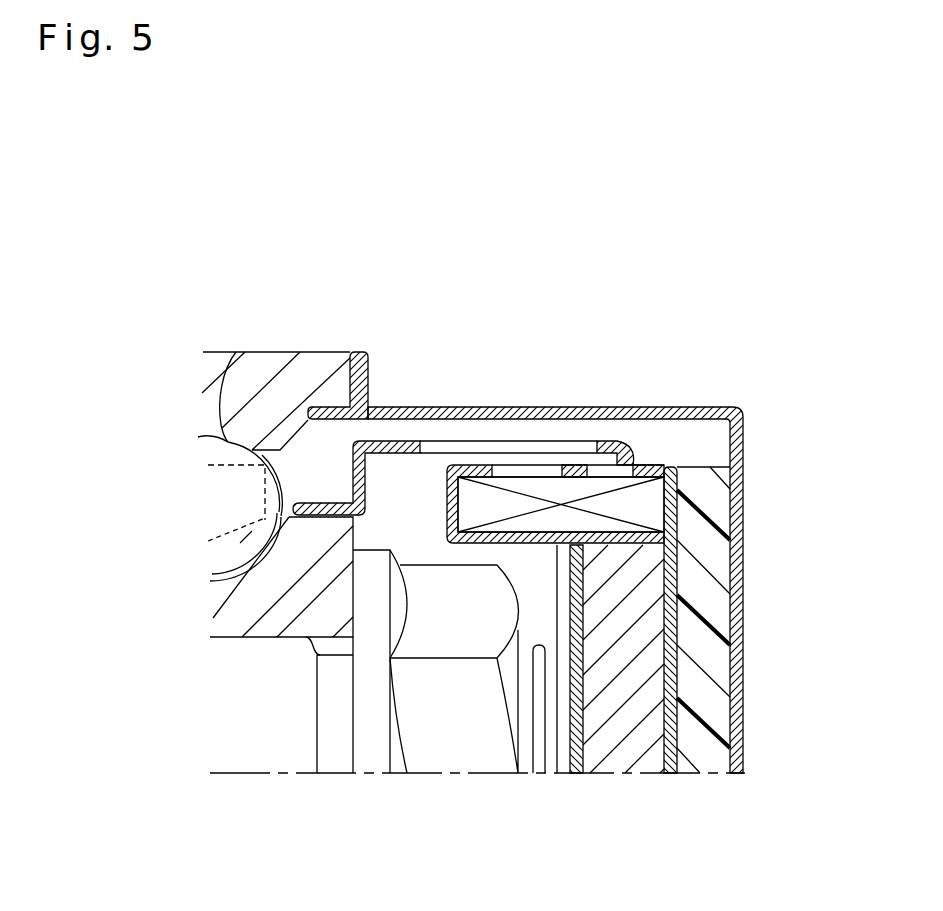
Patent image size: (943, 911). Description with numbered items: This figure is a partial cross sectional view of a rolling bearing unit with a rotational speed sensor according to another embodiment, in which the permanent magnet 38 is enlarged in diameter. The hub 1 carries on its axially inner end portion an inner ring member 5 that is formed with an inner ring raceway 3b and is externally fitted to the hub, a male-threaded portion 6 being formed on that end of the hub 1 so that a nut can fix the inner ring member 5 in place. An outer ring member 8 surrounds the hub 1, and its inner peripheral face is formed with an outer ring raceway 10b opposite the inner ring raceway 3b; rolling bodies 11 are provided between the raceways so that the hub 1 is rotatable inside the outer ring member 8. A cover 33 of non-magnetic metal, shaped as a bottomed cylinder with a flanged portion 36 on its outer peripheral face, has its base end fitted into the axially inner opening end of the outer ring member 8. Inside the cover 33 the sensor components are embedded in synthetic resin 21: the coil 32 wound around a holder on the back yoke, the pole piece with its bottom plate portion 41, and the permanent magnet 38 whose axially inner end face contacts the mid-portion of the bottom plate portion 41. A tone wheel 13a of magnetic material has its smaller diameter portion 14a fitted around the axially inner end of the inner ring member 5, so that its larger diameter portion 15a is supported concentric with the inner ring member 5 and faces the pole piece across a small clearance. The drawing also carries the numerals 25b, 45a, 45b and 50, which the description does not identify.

The hub 1 is at (215, 666).
The inner ring raceway 3b is at (240, 557).
The inner ring member 5 is at (288, 628).
The male-threaded portion 6 is at (323, 705).
The outer ring member 8 is at (273, 352).
The outer ring raceway 10b is at (213, 436).
The rolling bodies 11 is at (238, 352).
The tone wheel 13a is at (386, 441).
The smaller diameter portion 14a is at (331, 352).
The larger diameter portion 15a is at (480, 441).
The synthetic resin 21 is at (692, 621).
The coil 25b is at (482, 463).
The coil 32 is at (568, 493).
The cover 33 is at (740, 445).
The flanged portion 36 is at (361, 352).
The permanent magnet 38 is at (633, 740).
The bottom plate portion 41 is at (677, 513).
The bobbin flange 45a is at (460, 465).
The bobbin flange 45b is at (620, 443).
The bearing 50 is at (530, 548).